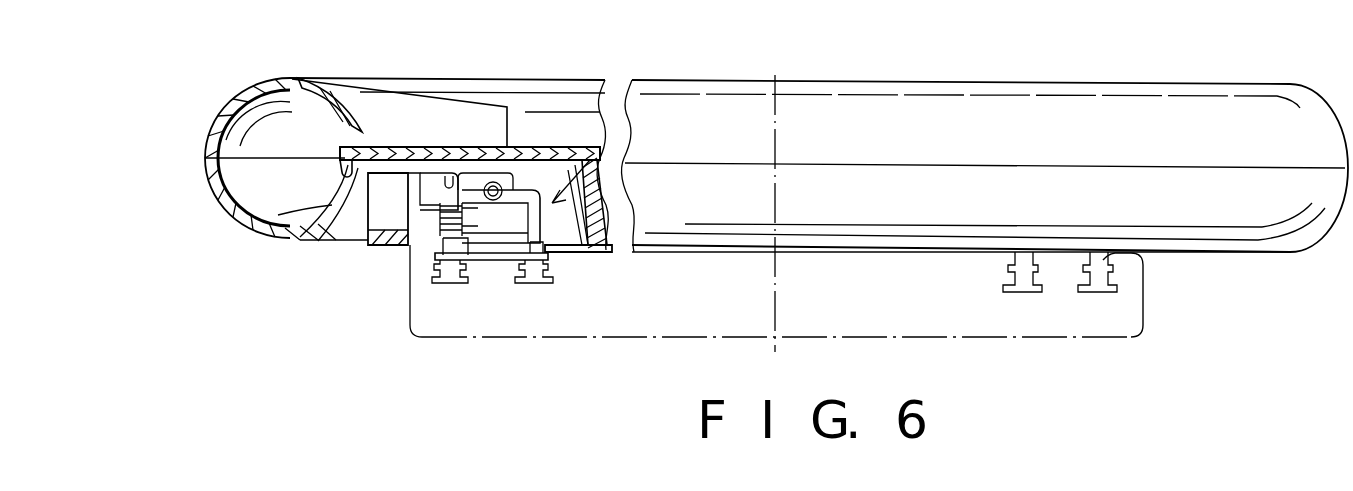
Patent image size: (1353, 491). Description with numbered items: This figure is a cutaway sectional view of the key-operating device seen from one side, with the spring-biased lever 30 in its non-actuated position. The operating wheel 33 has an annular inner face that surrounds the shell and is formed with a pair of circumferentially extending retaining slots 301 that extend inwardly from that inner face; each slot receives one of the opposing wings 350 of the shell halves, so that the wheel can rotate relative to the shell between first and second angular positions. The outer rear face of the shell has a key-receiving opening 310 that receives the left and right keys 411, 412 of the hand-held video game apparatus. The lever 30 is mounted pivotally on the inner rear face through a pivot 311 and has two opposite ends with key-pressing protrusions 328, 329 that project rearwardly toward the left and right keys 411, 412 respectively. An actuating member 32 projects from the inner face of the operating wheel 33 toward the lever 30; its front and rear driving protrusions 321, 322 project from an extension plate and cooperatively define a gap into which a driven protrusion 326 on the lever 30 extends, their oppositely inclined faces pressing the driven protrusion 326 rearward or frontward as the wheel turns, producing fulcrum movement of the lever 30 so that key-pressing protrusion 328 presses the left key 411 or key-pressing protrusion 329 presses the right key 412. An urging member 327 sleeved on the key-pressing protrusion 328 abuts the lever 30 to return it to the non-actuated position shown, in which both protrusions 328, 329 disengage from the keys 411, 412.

The spring-biased lever 30 is at (605, 81).
The retaining slot 301 is at (338, 128).
The wing 350 is at (350, 86).
The key-receiving opening 310 is at (494, 240).
The pivot 311 is at (512, 192).
The front driving protrusion 321 is at (455, 184).
The rear driving protrusion 322 is at (325, 243).
The actuating member 32 is at (372, 250).
The driven protrusion 326 is at (462, 172).
The key-pressing protrusion 328 is at (442, 232).
The urging member 327 is at (478, 205).
The left key 411 is at (445, 240).
The right key 412 is at (542, 287).
The key-pressing protrusion 329 is at (566, 250).
The operating wheel 33 is at (1223, 255).